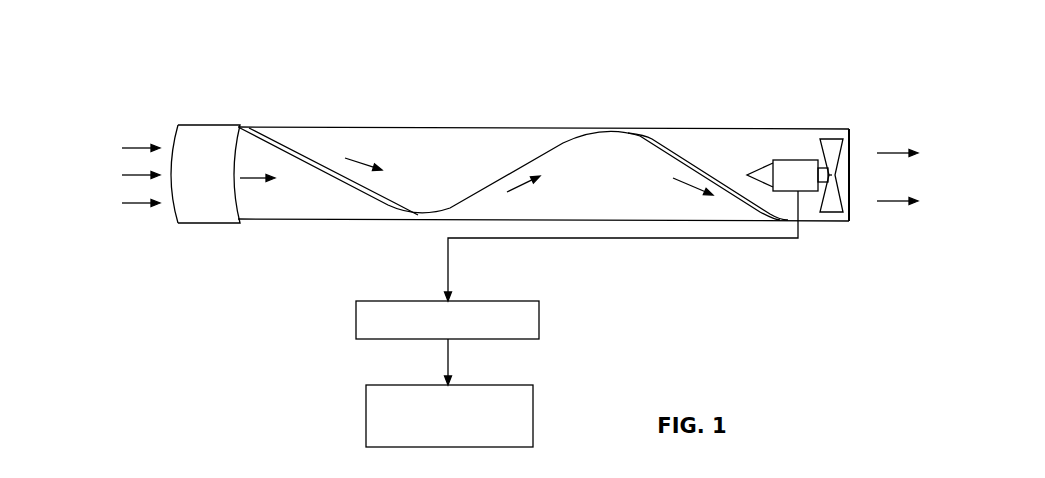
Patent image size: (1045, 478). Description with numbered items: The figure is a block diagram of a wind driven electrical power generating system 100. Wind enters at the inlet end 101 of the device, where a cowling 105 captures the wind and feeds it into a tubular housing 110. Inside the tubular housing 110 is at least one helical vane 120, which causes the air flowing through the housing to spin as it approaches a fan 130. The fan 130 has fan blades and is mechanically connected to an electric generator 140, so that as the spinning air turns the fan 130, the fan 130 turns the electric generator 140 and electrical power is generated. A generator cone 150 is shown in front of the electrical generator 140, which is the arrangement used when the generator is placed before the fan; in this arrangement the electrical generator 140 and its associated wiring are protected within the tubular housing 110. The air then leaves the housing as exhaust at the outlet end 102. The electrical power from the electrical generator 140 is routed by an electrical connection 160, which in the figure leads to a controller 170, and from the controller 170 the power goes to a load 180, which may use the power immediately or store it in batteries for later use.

The wind driven electrical power generating system 100 is at (555, 67).
The inlet end 101 is at (199, 242).
The outlet end 102 is at (823, 243).
The cowling 105 is at (197, 133).
The tubular housing 110 is at (370, 135).
The helical vane 120 is at (275, 141).
The fan 130 is at (828, 148).
The electric generator 140 is at (793, 167).
The generator cone 150 is at (727, 128).
The electrical connection 160 is at (447, 278).
The controller 170 is at (540, 302).
The load 180 is at (366, 425).